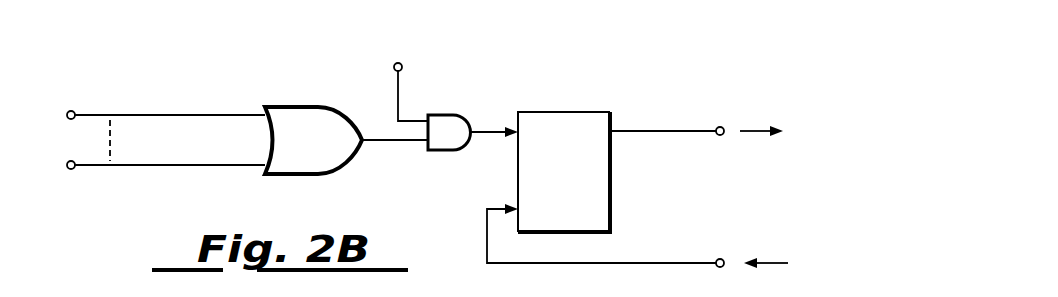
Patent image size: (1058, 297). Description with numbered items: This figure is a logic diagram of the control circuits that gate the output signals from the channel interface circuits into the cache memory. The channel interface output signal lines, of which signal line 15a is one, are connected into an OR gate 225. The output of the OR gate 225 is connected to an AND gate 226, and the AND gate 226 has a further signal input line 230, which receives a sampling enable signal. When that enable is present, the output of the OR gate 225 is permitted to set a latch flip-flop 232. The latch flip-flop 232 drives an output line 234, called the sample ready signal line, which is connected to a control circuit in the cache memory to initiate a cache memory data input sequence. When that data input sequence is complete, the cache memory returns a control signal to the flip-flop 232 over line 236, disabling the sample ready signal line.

The channel interface output signal line 15a is at (127, 114).
The OR gate 225 is at (290, 106).
The AND gate 226 is at (438, 114).
The signal input line 230 is at (399, 78).
The latch flip-flop 232 is at (547, 112).
The output line 234 is at (672, 130).
The line 236 is at (672, 263).